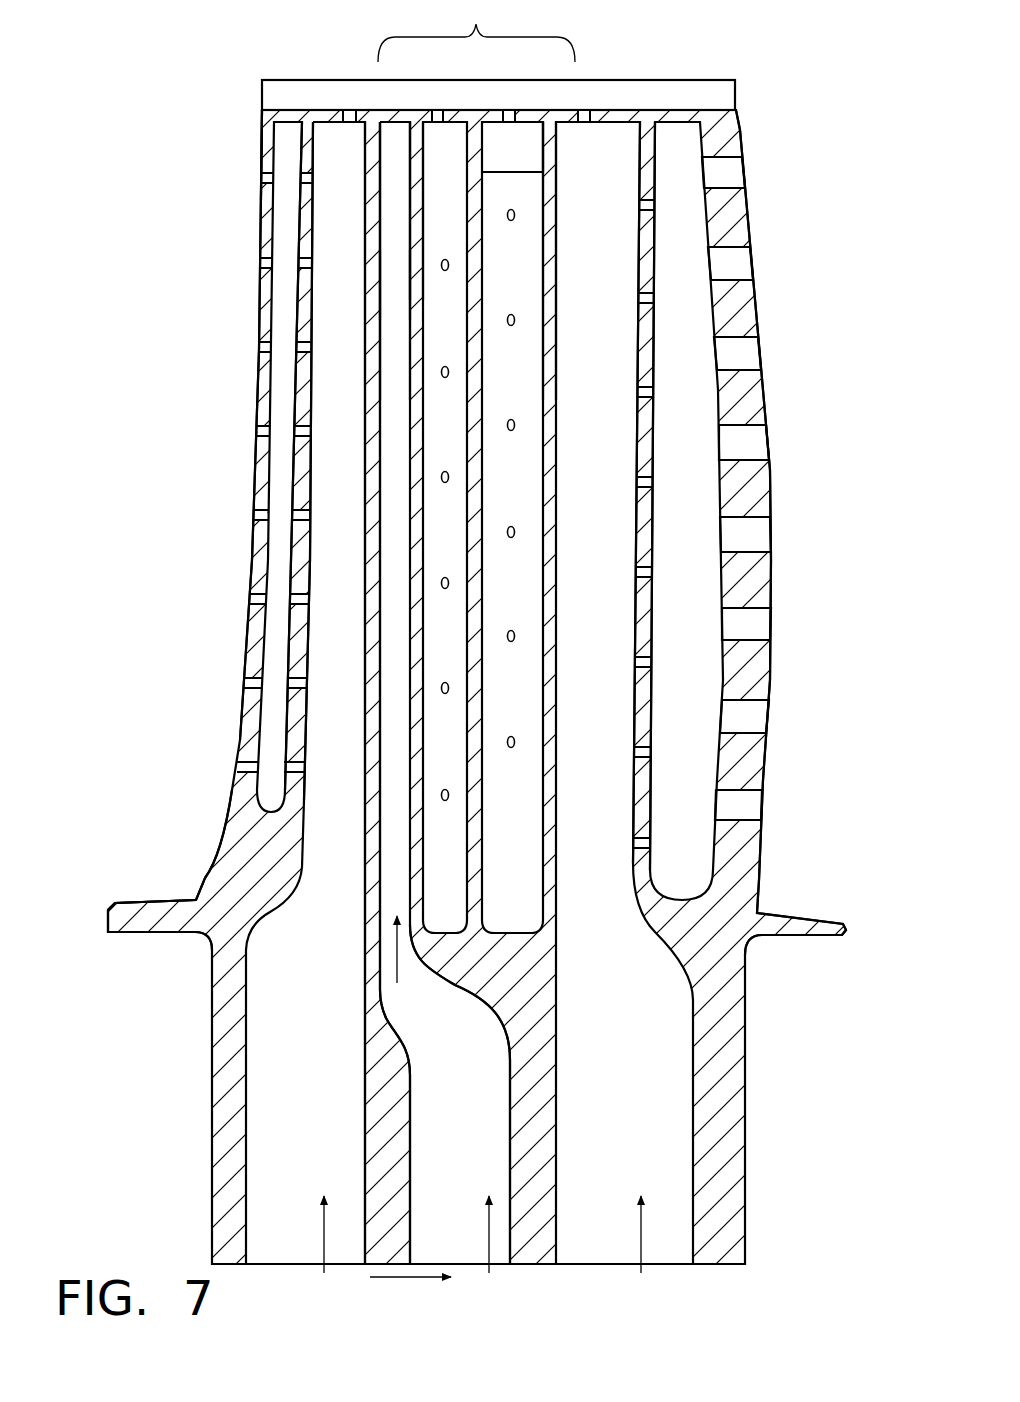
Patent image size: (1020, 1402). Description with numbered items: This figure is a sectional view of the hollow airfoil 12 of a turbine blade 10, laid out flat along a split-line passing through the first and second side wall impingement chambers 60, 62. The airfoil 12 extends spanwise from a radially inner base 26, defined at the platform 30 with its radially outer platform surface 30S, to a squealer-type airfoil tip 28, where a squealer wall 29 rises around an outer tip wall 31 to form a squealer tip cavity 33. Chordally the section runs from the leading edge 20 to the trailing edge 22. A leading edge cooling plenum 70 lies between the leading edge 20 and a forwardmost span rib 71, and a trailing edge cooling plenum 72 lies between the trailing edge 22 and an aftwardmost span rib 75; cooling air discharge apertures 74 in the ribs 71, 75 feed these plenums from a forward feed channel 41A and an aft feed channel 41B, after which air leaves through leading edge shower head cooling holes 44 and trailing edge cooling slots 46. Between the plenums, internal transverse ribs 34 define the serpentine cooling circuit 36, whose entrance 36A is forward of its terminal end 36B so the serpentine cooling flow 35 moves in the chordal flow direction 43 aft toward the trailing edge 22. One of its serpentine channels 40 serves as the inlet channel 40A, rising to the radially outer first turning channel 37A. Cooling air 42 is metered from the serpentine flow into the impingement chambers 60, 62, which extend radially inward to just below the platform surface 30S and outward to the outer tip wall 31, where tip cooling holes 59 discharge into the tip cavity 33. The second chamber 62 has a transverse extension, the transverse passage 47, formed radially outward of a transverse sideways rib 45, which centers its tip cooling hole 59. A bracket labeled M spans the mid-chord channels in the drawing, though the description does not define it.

The turbine blade 10 is at (771, 1301).
The hollow airfoil 12 is at (768, 200).
The leading edge 20 is at (258, 468).
The trailing edge 22 is at (770, 487).
The radially inner base 26 is at (193, 895).
The airfoil tip 28 is at (262, 137).
The squealer wall 29 is at (738, 93).
The platform 30 is at (112, 933).
The radially outer platform surface 30S is at (142, 903).
The outer tip wall 31 is at (690, 105).
The squealer tip cavity 33 is at (598, 100).
The transverse ribs 34 is at (550, 457).
The serpentine cooling flow 35 is at (398, 973).
The serpentine cooling circuit 36 is at (395, 487).
The entrance 36A is at (479, 1098).
The terminal end 36B is at (608, 135).
The radially outer first turning channel 37A is at (455, 130).
The serpentine channels 40 is at (393, 203).
The inlet channel 40A is at (393, 282).
The forward feed channel 41A is at (357, 858).
The aft feed channel 41B is at (619, 848).
The cooling air 42 is at (323, 1232).
The chordal flow direction 43 is at (392, 1275).
The leading edge shower head cooling holes 44 is at (250, 750).
The transverse sideways rib 45 is at (512, 172).
The cooling slots 46 is at (757, 455).
The transverse passage 47 is at (525, 149).
The tip cooling holes 59 is at (350, 110).
The first side wall impingement chamber 60 is at (432, 878).
The second side wall impingement chamber 62 is at (497, 878).
The leading edge cooling plenum 70 is at (277, 638).
The forwardmost span rib 71 is at (303, 630).
The trailing edge cooling plenum 72 is at (674, 740).
The cooling air discharge apertures 74 is at (305, 755).
The aftwardmost span rib 75 is at (645, 530).
The mid-chord region M is at (476, 24).